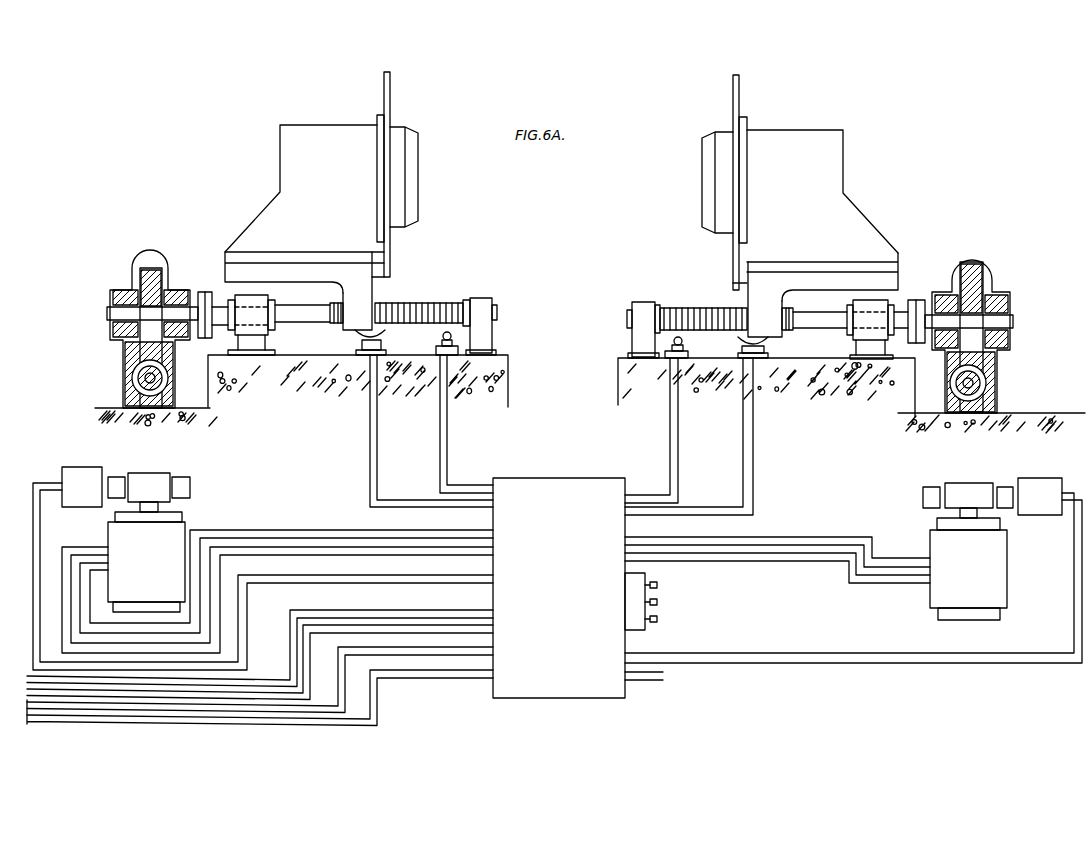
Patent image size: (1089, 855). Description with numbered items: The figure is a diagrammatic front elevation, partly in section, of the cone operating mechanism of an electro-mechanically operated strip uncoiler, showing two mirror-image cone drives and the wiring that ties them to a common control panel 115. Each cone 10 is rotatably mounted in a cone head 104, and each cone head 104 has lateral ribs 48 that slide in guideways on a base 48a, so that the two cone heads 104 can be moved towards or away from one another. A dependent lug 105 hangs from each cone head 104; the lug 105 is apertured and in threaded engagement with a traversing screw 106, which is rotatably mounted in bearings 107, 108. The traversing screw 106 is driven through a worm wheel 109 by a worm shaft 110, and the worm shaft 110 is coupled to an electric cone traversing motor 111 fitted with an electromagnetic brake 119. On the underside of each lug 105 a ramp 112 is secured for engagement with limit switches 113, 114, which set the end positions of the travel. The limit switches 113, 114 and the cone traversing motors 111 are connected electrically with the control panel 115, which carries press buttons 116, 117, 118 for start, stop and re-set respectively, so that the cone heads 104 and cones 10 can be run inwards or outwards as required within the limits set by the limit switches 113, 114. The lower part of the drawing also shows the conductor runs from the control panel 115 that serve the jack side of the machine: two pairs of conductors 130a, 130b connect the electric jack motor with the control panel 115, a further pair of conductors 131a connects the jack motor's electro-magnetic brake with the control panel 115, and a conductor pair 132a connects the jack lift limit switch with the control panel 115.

The cone 10 is at (400, 169).
The lateral rib 48 is at (240, 255).
The base 48a is at (818, 375).
The cone head 104 is at (288, 193).
The dependent lug 105 is at (365, 292).
The traversing screw 106 is at (437, 303).
The bearing 107 is at (480, 310).
The bearing 108 is at (247, 343).
The worm wheel 109 is at (152, 275).
The worm shaft 110 is at (157, 377).
The electric cone traversing motor 111 is at (167, 547).
The ramp 112 is at (360, 333).
The limit switch 113 is at (375, 340).
The limit switch 114 is at (445, 347).
The control panel 115 is at (570, 493).
The press button 116 is at (657, 585).
The press button 117 is at (657, 602).
The press button 118 is at (657, 619).
The electromagnetic brake 119 is at (86, 474).
The pair of conductors 130a is at (352, 600).
The pair of conductors 130b is at (452, 600).
The pair of conductors 131a is at (340, 689).
The conductor pair 132a is at (463, 679).